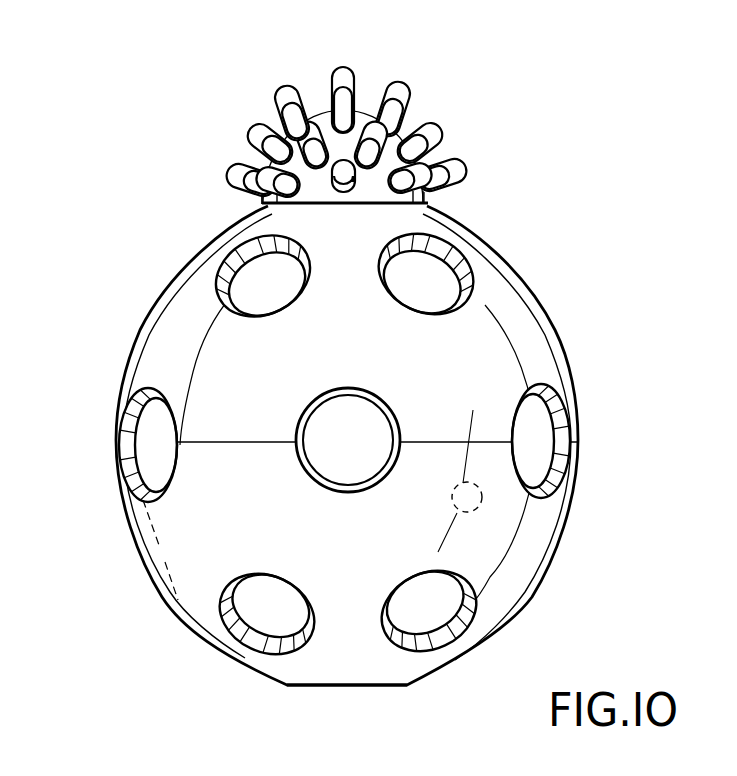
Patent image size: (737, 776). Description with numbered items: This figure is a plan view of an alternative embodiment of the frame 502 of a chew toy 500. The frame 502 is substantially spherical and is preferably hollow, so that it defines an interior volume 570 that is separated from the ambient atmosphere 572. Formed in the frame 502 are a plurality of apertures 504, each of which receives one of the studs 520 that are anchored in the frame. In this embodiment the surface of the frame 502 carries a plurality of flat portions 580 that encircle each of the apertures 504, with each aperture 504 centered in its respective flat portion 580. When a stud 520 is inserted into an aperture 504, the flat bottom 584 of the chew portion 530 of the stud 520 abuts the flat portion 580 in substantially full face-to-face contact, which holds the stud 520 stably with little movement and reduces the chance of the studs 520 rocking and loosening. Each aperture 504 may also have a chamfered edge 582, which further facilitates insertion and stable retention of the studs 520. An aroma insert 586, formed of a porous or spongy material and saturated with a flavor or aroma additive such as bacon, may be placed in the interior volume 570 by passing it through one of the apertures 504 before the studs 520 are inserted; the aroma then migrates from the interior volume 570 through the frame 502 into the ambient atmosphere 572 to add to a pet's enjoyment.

The chew toy 500 is at (168, 267).
The frame 502 is at (507, 300).
The apertures 504 is at (124, 430).
The studs 520 is at (434, 34).
The chew portion 530 is at (287, 137).
The interior volume 570 is at (376, 457).
The ambient atmosphere 572 is at (690, 384).
The flat portions 580 is at (428, 222).
The chamfered edges 582 is at (122, 478).
The flat bottom 584 is at (250, 205).
The aroma insert 586 is at (502, 510).